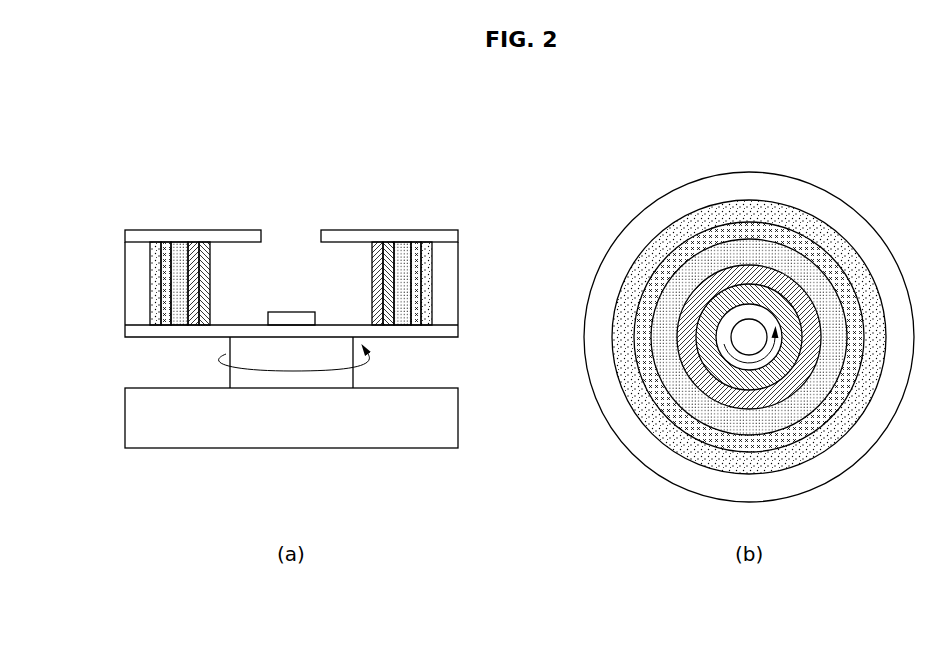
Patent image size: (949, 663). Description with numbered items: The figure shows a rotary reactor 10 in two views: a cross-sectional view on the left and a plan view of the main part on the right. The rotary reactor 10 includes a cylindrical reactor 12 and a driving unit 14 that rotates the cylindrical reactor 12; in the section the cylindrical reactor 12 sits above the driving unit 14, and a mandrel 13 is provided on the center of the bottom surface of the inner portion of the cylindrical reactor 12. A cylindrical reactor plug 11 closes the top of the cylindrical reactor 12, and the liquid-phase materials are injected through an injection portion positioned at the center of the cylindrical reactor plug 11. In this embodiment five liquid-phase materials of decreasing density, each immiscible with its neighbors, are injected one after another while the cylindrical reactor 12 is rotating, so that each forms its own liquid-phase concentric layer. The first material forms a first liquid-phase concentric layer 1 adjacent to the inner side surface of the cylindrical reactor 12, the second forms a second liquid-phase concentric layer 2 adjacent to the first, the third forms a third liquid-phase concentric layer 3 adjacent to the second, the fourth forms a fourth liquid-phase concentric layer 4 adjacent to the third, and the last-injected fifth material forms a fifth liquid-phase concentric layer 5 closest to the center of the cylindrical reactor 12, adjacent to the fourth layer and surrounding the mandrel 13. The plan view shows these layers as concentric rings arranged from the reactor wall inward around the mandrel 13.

The first liquid-phase concentric layer 1 is at (518, 337).
The second liquid-phase concentric layer 2 is at (513, 337).
The third liquid-phase concentric layer 3 is at (509, 337).
The fourth liquid-phase concentric layer 4 is at (504, 325).
The fifth liquid-phase concentric layer 5 is at (500, 316).
The rotary reactor 10 is at (467, 178).
The cylindrical reactor plug 11 is at (234, 224).
The cylindrical reactor 12 is at (462, 339).
The mandrel 13 is at (300, 309).
The driving unit 14 is at (424, 451).